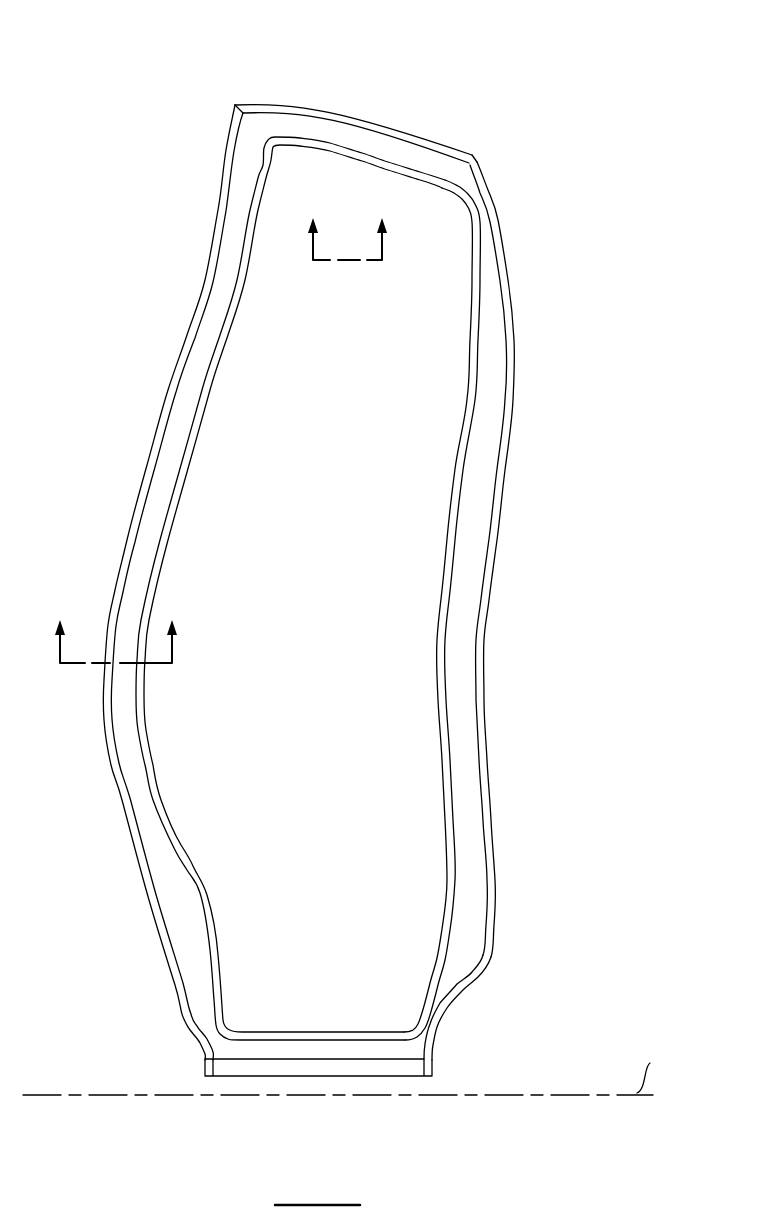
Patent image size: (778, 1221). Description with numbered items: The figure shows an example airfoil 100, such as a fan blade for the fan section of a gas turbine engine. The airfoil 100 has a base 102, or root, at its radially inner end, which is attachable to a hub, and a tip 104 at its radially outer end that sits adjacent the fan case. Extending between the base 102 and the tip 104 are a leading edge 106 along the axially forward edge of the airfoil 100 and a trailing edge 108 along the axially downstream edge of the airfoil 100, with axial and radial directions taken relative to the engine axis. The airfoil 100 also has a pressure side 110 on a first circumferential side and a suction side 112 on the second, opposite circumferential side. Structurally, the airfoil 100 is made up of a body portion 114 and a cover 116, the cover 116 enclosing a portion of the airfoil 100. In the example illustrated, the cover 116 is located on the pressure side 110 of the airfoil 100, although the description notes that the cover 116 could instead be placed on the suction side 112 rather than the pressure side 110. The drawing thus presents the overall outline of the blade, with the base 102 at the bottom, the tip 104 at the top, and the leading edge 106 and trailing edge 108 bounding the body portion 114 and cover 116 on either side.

The airfoil 100 is at (556, 98).
The base 102 is at (397, 1070).
The tip 104 is at (367, 122).
The leading edge 106 is at (127, 538).
The trailing edge 108 is at (497, 550).
The pressure side 110 is at (215, 437).
The suction side 112 is at (505, 186).
The body portion 114 is at (453, 980).
The cover 116 is at (450, 353).